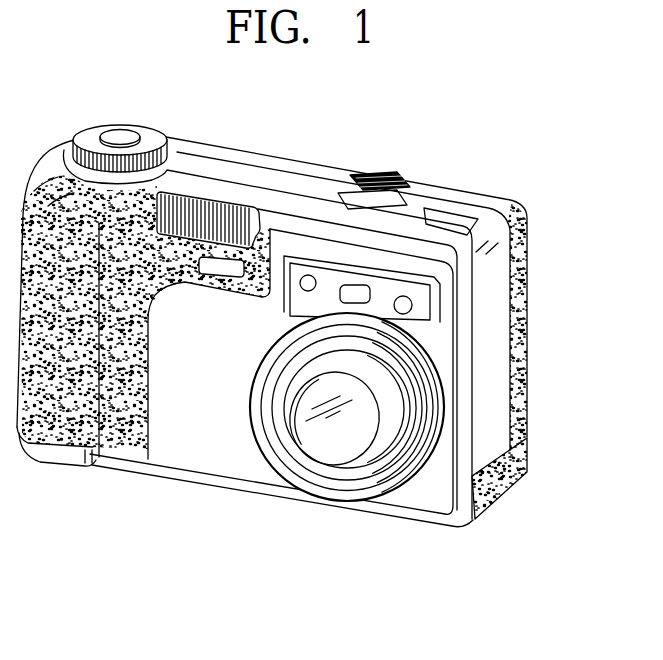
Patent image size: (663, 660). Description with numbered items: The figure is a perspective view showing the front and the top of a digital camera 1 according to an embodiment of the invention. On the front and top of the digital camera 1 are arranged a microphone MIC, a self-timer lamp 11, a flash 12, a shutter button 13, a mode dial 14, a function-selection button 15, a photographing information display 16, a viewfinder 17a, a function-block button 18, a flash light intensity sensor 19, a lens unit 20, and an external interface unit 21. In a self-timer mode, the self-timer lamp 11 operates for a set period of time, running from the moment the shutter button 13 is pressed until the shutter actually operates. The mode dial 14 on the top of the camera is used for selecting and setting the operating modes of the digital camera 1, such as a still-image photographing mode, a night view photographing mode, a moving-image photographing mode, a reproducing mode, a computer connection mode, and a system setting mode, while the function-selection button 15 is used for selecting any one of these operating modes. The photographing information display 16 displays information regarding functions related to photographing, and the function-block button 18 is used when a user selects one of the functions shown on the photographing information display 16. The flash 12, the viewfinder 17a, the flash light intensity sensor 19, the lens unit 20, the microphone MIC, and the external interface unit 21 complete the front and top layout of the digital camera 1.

The digital camera 1 is at (200, 553).
The self-timer lamp 11 is at (310, 276).
The flash 12 is at (202, 212).
The shutter button 13 is at (118, 133).
The mode dial 14 is at (87, 138).
The function-selection button 15 is at (369, 175).
The photographing information display 16 is at (378, 200).
The viewfinder 17a is at (358, 289).
The function-block button 18 is at (398, 182).
The flash light intensity sensor 19 is at (428, 306).
The lens unit 20 is at (362, 417).
The external interface unit 21 is at (524, 462).
The microphone MIC is at (229, 264).